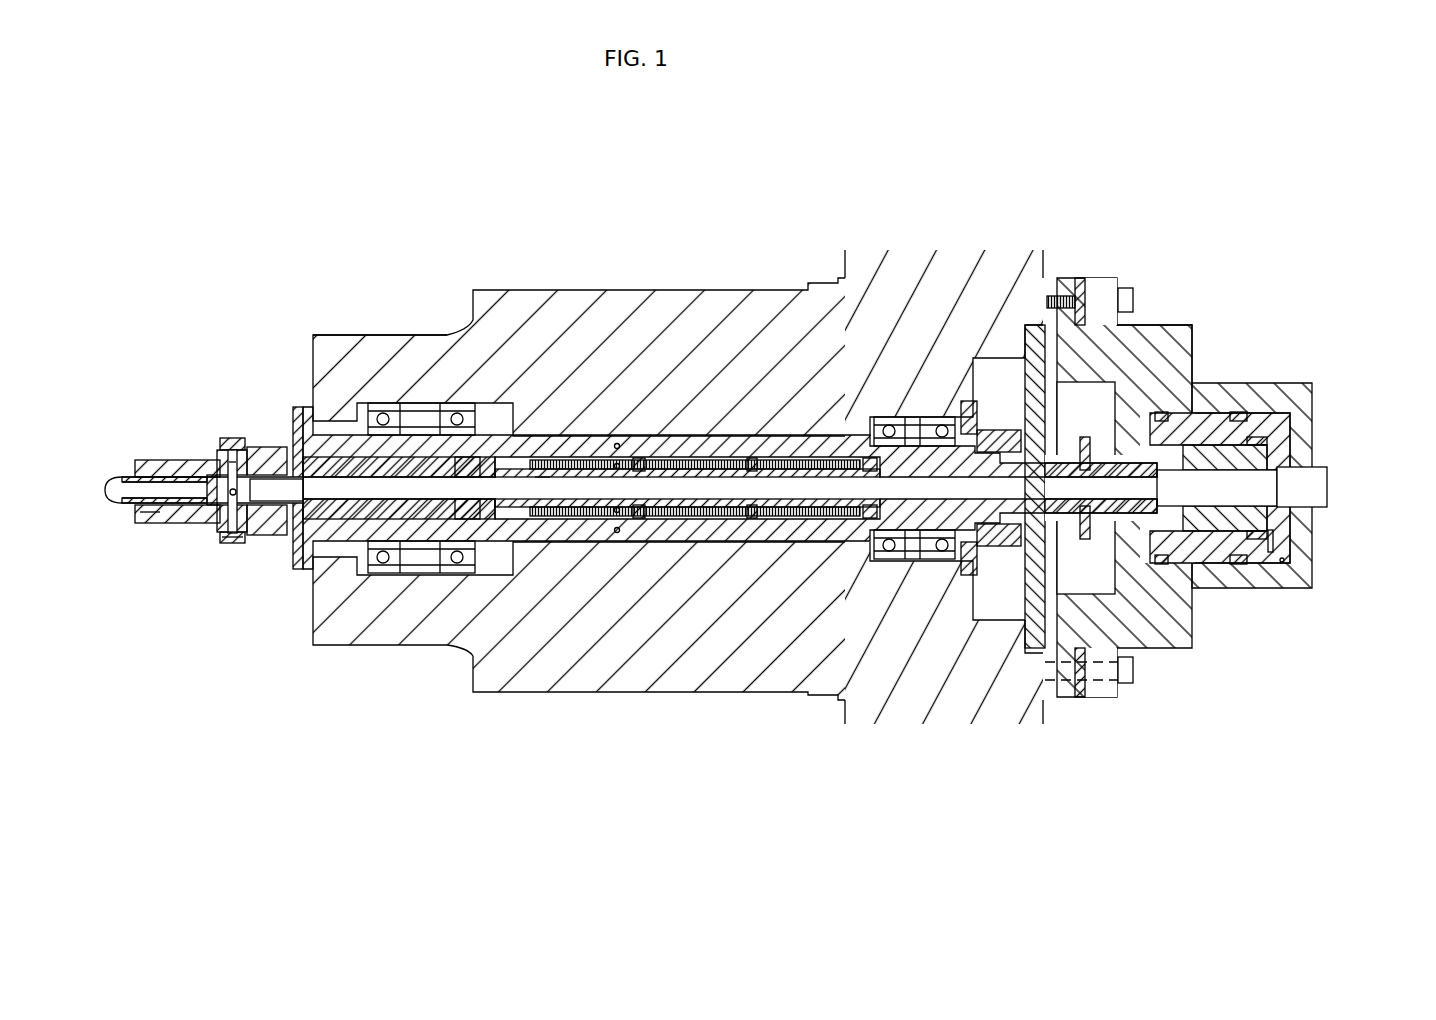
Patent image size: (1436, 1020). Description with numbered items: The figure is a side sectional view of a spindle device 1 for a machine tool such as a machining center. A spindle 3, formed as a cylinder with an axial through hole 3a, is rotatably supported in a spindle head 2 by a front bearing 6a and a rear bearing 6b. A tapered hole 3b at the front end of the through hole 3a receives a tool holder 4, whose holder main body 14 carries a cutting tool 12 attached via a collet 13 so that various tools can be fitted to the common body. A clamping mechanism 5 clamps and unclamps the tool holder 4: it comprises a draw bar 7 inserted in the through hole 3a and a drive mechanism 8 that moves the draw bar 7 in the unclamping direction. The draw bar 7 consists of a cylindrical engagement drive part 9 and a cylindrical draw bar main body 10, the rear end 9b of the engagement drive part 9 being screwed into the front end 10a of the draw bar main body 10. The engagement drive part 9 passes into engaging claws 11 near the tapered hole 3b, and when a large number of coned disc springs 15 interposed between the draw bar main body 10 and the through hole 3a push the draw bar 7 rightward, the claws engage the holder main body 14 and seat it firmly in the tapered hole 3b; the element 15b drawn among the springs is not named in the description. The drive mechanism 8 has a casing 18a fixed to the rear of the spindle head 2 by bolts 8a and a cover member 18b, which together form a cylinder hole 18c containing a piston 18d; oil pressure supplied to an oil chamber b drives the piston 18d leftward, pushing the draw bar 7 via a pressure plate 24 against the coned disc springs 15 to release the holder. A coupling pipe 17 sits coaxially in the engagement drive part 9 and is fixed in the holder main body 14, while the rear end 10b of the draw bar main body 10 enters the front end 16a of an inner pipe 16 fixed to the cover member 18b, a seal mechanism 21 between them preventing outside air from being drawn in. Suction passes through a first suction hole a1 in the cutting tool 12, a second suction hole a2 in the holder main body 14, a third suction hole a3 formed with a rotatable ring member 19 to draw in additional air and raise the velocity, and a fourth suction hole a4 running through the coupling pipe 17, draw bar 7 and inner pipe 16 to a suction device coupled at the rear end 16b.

The spindle device 1 is at (652, 237).
The spindle head 2 is at (735, 290).
The spindle 3 is at (722, 435).
The through hole 3a is at (619, 444).
The tapered hole 3b is at (298, 412).
The tool holder 4 is at (204, 461).
The clamping mechanism 5 is at (852, 365).
The front bearing 6a is at (457, 403).
The rear bearing 6b is at (942, 417).
The draw bar 7 is at (667, 497).
The drive mechanism 8 is at (1252, 382).
The bolts 8a is at (1122, 288).
The engagement drive part 9 is at (491, 479).
The rear end of engagement drive part 9b is at (468, 457).
The draw bar main body 10 is at (687, 484).
The front end of draw bar main body 10a is at (512, 469).
The rear end of draw bar main body 10b is at (1140, 460).
The engaging claws 11 is at (340, 460).
The cutting tool 12 is at (122, 477).
The collet 13 is at (168, 523).
The holder main body 14 is at (196, 460).
The coned disc springs 15 is at (680, 460).
The spring seat 15b is at (588, 460).
The inner pipe 16 is at (1280, 468).
The front end of inner pipe 16a is at (1170, 470).
The rear end of inner pipe 16b is at (1330, 500).
The coupling pipe 17 is at (265, 447).
The casing 18a is at (1150, 326).
The cover member 18b is at (1313, 395).
The cylinder hole 18c is at (1236, 395).
The piston 18d is at (1274, 418).
The ring member 19 is at (230, 438).
The seal mechanism 21 is at (1085, 539).
The pressure plate 24 is at (1085, 437).
The first suction hole a1 is at (150, 514).
The second suction hole a2 is at (229, 505).
The third suction hole a3 is at (232, 543).
The fourth suction hole a4 is at (542, 477).
The oil chamber b is at (1276, 548).